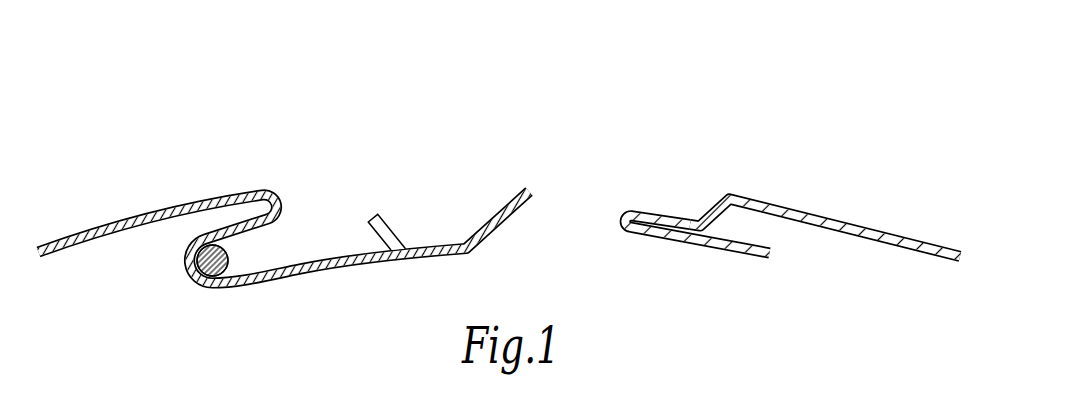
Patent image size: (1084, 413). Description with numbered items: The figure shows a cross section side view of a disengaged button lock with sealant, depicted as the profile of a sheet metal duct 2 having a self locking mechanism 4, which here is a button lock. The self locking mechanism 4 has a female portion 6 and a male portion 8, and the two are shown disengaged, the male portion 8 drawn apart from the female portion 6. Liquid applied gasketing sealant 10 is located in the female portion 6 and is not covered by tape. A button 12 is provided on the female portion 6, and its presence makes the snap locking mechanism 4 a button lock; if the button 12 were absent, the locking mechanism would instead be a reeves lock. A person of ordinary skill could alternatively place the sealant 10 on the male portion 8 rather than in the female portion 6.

The sheet metal duct 2 is at (137, 214).
The self locking mechanism 4 is at (476, 51).
The female portion 6 is at (268, 278).
The male portion 8 is at (667, 214).
The liquid applied gasketing sealant 10 is at (195, 265).
The button 12 is at (390, 222).